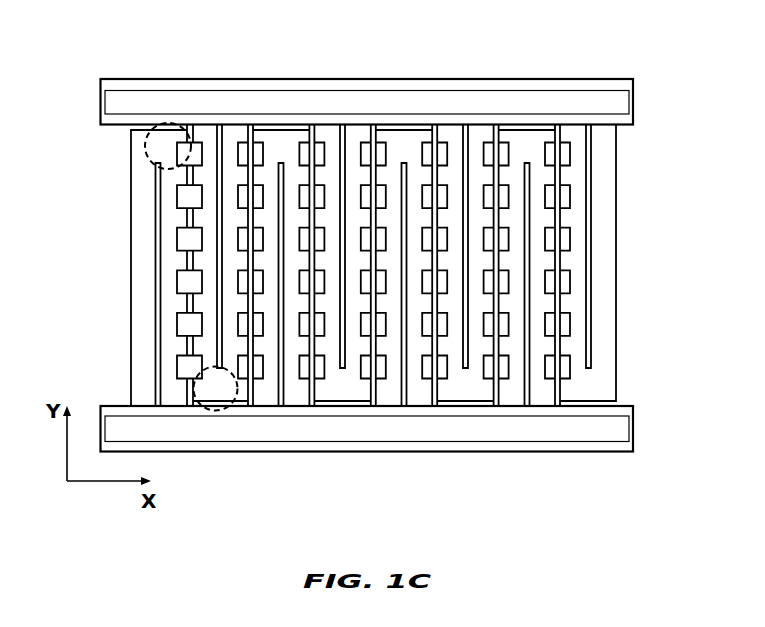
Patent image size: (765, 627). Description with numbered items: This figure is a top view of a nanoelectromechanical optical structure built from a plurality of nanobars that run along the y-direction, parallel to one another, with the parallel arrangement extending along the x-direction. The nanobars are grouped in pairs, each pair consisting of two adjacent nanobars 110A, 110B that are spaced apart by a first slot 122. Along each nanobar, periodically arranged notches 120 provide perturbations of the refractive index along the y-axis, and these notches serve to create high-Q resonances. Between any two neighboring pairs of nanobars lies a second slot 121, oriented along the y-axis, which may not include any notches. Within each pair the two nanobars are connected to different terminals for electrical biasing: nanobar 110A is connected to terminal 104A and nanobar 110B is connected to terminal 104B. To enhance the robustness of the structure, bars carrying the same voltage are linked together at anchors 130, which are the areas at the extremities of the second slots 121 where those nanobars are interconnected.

The terminal 104A is at (432, 103).
The terminal 104B is at (512, 430).
The nanobar 110A is at (195, 302).
The nanobar 110B is at (180, 218).
The notches 120 is at (497, 283).
The second slot 121 is at (527, 394).
The first slot 122 is at (557, 177).
The anchors 130 is at (215, 410).